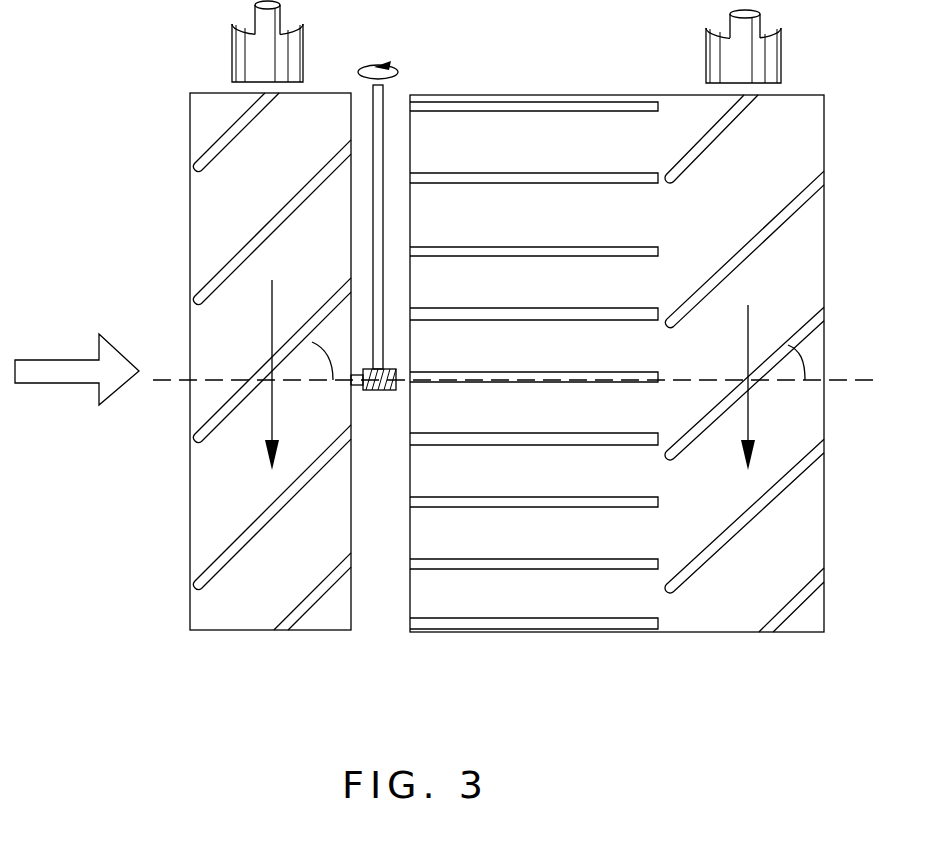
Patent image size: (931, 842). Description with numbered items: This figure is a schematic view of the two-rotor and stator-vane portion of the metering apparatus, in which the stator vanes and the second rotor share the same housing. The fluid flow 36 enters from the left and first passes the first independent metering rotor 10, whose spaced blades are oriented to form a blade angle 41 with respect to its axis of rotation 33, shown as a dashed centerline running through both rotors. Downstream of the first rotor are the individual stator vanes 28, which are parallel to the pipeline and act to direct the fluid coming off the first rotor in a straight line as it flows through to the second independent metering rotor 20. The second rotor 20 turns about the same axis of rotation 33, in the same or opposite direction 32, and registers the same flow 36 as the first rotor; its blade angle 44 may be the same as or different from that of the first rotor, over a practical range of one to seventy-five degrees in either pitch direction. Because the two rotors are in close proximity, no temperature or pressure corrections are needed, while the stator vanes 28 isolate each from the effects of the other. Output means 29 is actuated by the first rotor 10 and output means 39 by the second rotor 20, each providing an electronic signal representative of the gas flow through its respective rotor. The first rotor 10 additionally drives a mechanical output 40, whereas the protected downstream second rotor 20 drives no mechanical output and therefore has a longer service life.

The first independent metering rotor 10 is at (190, 518).
The second independent metering rotor 20 is at (818, 543).
The stator vanes 28 is at (482, 638).
The output means 29 is at (232, 63).
The direction of rotation 32 is at (509, 360).
The axis of rotation 33 is at (165, 386).
The flow 36 is at (64, 359).
The output means 39 is at (706, 63).
The mechanical output 40 is at (383, 102).
The blade angle 41 is at (322, 354).
The blade angle 44 is at (795, 362).